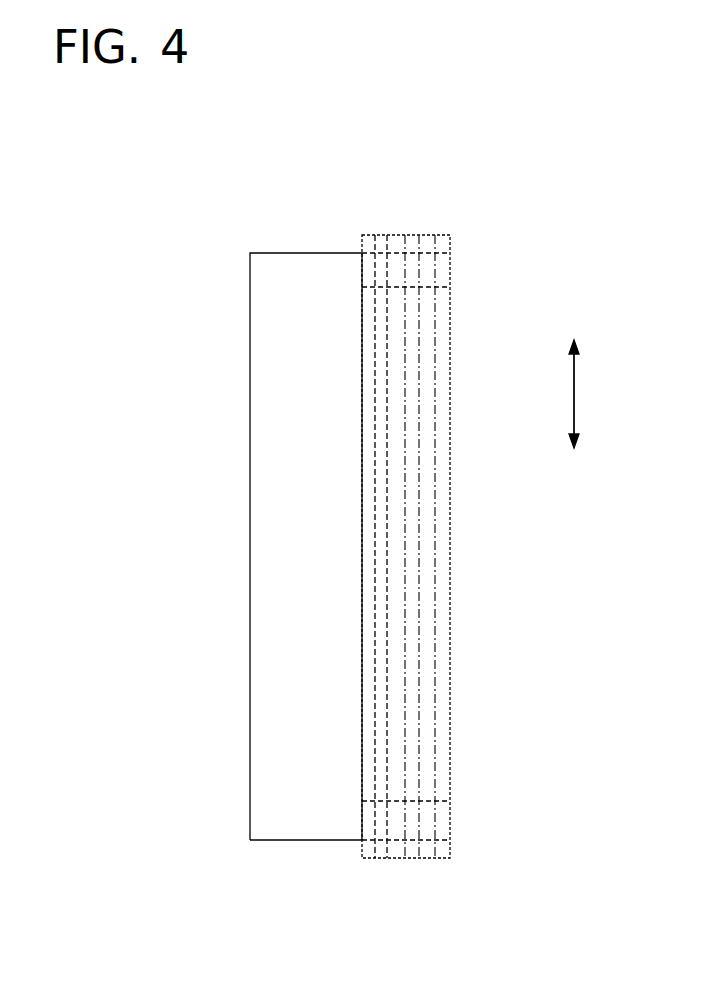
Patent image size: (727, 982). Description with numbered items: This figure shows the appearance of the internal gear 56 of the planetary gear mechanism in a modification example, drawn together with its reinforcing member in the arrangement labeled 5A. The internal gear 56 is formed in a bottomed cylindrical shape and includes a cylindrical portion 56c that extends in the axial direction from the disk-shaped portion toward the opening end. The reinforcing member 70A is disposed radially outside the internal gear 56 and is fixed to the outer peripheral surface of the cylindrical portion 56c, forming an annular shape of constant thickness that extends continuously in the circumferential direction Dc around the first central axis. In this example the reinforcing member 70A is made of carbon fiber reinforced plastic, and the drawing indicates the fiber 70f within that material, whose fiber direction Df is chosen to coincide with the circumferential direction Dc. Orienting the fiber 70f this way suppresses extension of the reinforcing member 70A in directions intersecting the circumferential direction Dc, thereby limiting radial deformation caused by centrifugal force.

The head unit 5A is at (248, 307).
The internal gear 56 is at (282, 253).
The cylindrical portion 56c is at (312, 828).
The reinforcing member 70A is at (410, 243).
The fiber 70f is at (375, 595).
The fiber direction Df is at (558, 394).
The circumferential direction Dc is at (593, 394).